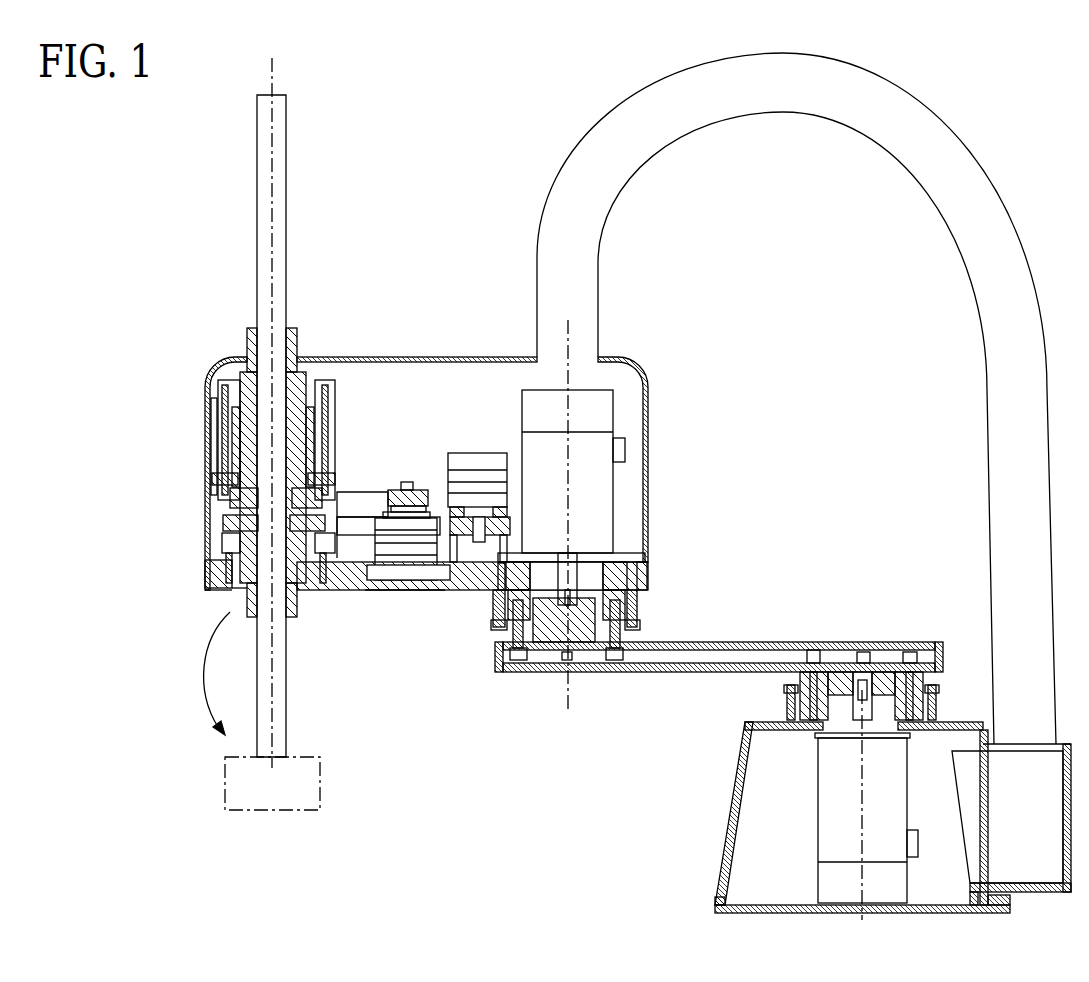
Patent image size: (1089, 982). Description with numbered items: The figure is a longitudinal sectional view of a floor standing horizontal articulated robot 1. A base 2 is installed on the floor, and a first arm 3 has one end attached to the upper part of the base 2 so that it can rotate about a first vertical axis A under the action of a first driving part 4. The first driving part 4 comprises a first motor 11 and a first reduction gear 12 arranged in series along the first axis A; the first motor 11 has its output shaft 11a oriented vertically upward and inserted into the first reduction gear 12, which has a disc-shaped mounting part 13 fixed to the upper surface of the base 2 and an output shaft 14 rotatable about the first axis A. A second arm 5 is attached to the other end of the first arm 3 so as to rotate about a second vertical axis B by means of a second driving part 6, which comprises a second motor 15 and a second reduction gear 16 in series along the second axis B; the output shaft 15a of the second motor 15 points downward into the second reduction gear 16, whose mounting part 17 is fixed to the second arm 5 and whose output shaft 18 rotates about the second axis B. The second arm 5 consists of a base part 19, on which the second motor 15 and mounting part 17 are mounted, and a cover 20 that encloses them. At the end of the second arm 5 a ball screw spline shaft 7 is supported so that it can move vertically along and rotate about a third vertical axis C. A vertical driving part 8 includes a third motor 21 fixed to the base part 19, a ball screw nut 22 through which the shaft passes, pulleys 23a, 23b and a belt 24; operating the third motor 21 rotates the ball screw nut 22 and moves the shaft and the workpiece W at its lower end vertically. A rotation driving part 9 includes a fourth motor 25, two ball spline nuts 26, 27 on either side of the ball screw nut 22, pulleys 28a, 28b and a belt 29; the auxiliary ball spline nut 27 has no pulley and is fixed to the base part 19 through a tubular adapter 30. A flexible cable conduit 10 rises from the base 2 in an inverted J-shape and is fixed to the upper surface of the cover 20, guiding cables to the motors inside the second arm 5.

The horizontal articulated robot 1 is at (420, 124).
The base 2 is at (728, 920).
The first arm 3 is at (762, 626).
The first driving part 4 is at (790, 812).
The second arm 5 is at (400, 604).
The second driving part 6 is at (628, 424).
The ball screw spline shaft 7 is at (290, 725).
The vertical driving part 8 is at (318, 425).
The rotation driving part 9 is at (305, 612).
The cable conduit 10 is at (962, 143).
The first motor 11 is at (818, 838).
The output shaft 11a is at (843, 690).
The first reduction gear 12 is at (883, 658).
The mounting part 13 is at (782, 710).
The output shaft 14 is at (923, 680).
The second motor 15 is at (613, 486).
The output shaft 15a is at (578, 578).
The second reduction gear 16 is at (550, 654).
The mounting part 17 is at (640, 605).
The output shaft 18 is at (490, 642).
The base part 19 is at (428, 595).
The cover 20 is at (445, 357).
The third motor 21 is at (371, 582).
The ball screw nut 22 is at (243, 428).
The pulley 23a is at (235, 510).
The pulley 23b is at (412, 482).
The belt 24 is at (382, 490).
The fourth motor 25 is at (478, 453).
The ball spline nut 26 is at (245, 602).
The ball spline nut 27 is at (247, 337).
The pulley 28a is at (240, 542).
The pulley 28b is at (453, 565).
The belt 29 is at (350, 500).
The adapter 30 is at (217, 445).
The first axis A is at (860, 762).
The second axis B is at (565, 326).
The third axis C is at (270, 72).
The workpiece W is at (320, 785).